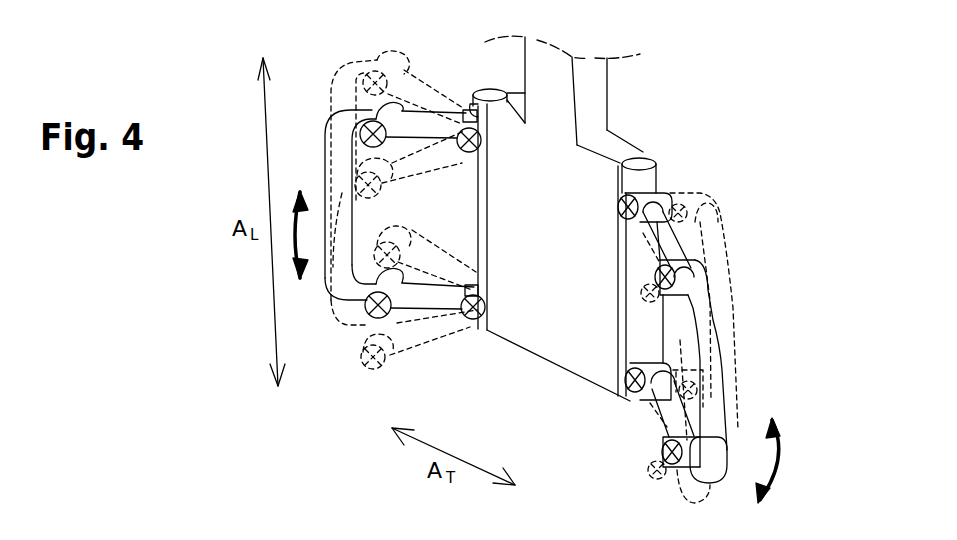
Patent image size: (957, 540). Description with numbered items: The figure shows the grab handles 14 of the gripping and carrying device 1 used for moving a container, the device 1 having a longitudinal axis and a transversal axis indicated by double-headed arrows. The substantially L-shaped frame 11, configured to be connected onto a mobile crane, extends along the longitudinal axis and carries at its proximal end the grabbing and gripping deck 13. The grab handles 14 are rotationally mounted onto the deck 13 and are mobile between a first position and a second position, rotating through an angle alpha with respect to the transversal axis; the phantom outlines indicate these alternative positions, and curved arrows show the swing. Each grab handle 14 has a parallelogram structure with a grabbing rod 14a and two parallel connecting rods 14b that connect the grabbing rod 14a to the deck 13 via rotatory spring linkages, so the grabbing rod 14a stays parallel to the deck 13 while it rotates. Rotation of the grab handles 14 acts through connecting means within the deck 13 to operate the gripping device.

The gripping and carrying device 1 is at (680, 111).
The frame 11 is at (594, 102).
The grabbing and gripping deck 13 is at (565, 330).
The grab handles 14 is at (326, 147).
The grabbing rod 14a is at (333, 258).
The connecting rods 14b is at (417, 118).